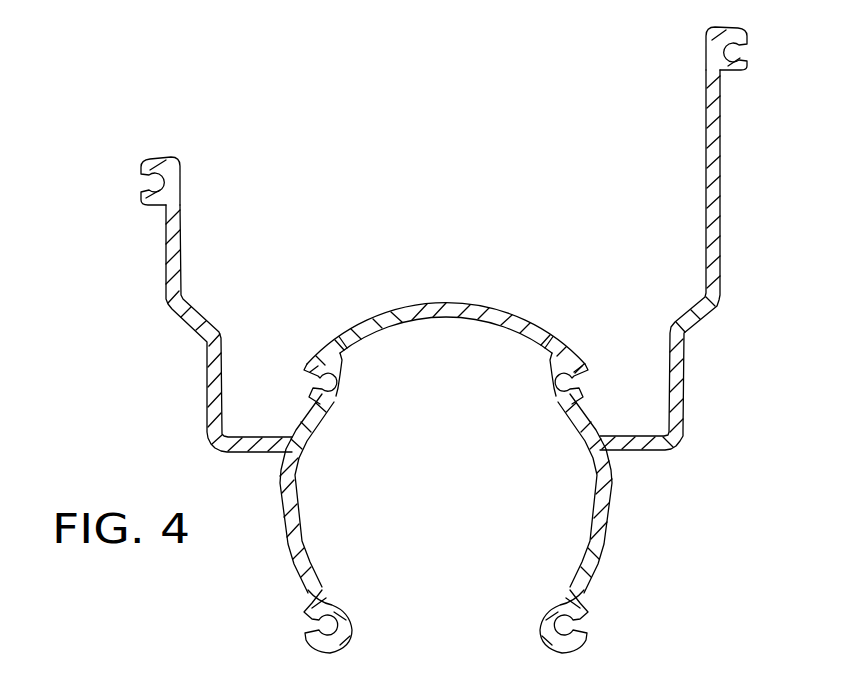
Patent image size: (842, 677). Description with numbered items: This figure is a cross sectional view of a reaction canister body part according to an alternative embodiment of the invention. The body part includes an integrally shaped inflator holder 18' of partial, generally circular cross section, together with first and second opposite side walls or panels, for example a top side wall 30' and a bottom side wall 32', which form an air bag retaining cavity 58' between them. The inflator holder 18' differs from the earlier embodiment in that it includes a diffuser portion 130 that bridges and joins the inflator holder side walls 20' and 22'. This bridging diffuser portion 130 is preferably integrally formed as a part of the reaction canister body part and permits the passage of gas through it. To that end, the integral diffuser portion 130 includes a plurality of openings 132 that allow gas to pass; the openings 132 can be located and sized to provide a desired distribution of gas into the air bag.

The air bag retaining cavity 58' is at (438, 340).
The diffuser portion 130 is at (467, 302).
The openings 132 is at (390, 313).
The first side wall 30' is at (192, 304).
The second side wall 32' is at (692, 238).
The inflator holder 18' is at (485, 503).
The inflator holder side wall 20' is at (327, 493).
The inflator holder side wall 22' is at (565, 493).